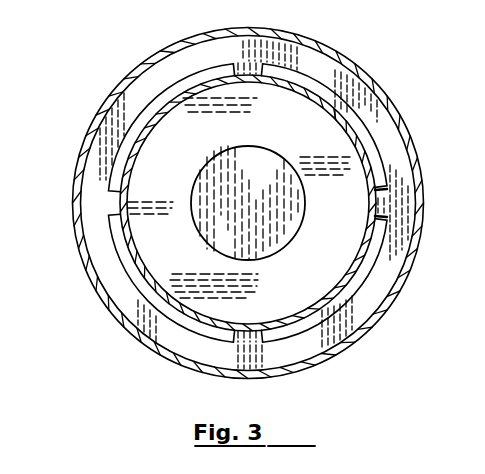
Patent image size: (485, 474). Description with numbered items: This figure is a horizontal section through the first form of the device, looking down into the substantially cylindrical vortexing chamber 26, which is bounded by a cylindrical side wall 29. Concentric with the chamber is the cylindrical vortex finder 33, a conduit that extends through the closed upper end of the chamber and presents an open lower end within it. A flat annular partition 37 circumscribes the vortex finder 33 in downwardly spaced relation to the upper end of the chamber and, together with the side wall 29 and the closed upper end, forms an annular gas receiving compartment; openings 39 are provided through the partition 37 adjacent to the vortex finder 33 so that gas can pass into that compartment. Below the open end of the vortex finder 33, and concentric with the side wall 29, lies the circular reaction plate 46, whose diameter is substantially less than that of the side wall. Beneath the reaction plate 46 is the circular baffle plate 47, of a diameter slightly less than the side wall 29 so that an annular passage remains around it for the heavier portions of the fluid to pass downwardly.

The vortexing chamber 26 is at (190, 260).
The cylindrical side wall 29 is at (408, 133).
The vortex finder 33 is at (320, 104).
The annular partition 37 is at (298, 57).
The openings 39 is at (137, 128).
The reaction plate 46 is at (272, 194).
The baffle plate 47 is at (301, 295).